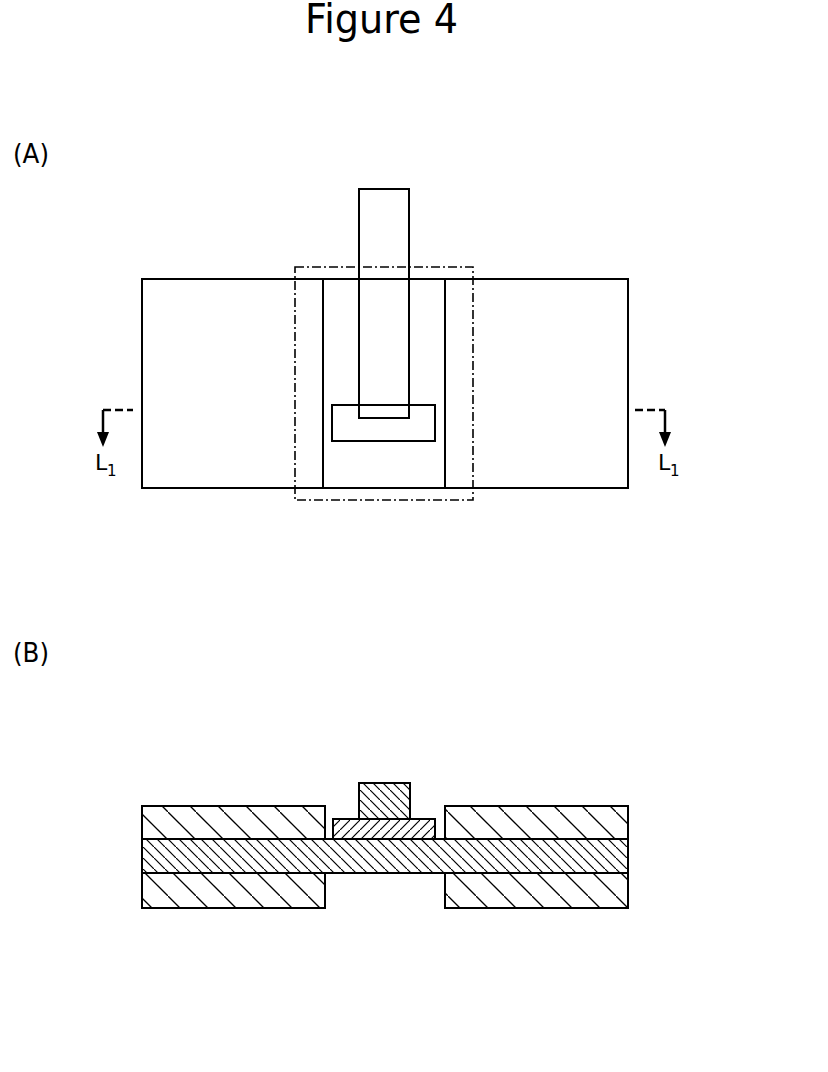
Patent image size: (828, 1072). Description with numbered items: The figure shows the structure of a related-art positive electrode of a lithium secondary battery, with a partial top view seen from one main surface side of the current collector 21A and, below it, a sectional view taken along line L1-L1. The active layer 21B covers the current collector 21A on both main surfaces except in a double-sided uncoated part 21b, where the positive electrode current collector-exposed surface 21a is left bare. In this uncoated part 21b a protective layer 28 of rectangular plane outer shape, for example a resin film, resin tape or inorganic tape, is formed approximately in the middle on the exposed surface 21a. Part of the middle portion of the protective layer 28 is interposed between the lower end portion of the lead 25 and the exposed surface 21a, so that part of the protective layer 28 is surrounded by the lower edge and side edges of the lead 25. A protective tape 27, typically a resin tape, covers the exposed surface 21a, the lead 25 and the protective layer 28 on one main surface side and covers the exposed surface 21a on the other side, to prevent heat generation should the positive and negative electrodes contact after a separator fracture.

The active layer 21B is at (605, 322).
The current collector 21A is at (605, 850).
The double-sided uncoated part 21b is at (337, 305).
The positive electrode current collector-exposed surface 21a is at (349, 447).
The lead 25 is at (395, 223).
The protective tape 27 is at (474, 493).
The protective layer 28 is at (427, 432).